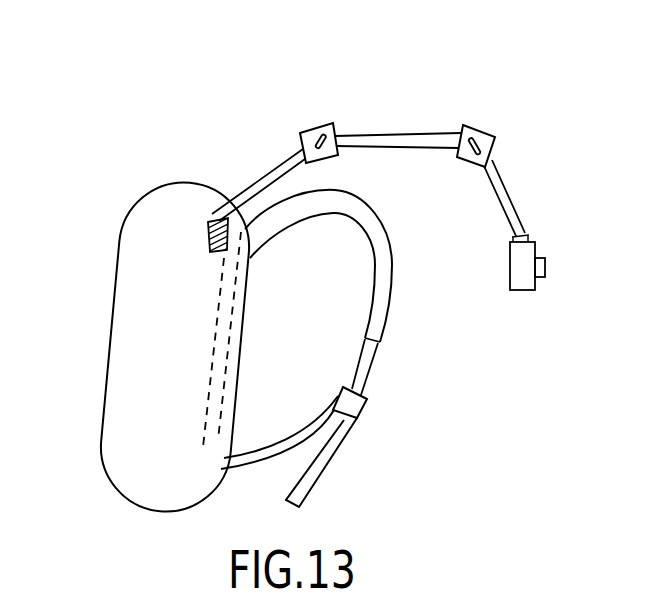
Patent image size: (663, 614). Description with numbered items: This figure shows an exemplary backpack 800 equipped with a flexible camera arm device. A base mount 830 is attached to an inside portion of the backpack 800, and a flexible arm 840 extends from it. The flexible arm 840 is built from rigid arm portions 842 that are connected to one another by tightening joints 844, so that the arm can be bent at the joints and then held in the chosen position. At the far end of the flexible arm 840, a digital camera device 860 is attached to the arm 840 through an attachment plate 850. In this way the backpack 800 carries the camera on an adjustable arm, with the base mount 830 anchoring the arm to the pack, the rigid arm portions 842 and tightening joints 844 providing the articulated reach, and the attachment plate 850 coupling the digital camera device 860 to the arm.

The backpack 800 is at (136, 282).
The base mount 830 is at (208, 402).
The flexible arm 840 is at (400, 138).
The rigid arm portions 842 is at (365, 132).
The tightening joints 844 is at (338, 158).
The attachment plate 850 is at (527, 237).
The digital camera device 860 is at (537, 293).